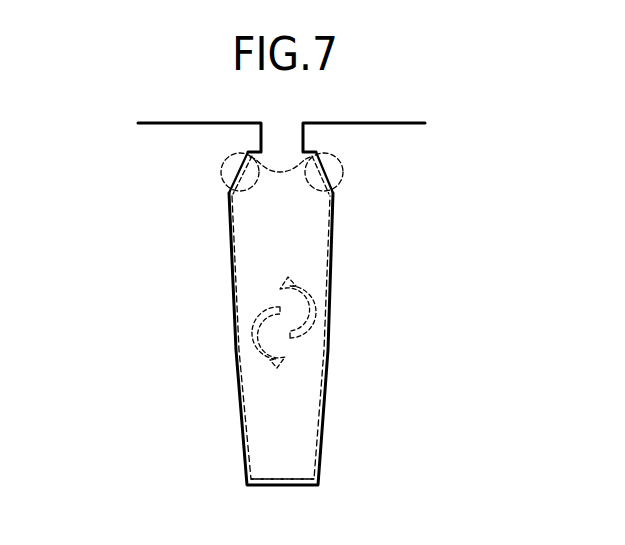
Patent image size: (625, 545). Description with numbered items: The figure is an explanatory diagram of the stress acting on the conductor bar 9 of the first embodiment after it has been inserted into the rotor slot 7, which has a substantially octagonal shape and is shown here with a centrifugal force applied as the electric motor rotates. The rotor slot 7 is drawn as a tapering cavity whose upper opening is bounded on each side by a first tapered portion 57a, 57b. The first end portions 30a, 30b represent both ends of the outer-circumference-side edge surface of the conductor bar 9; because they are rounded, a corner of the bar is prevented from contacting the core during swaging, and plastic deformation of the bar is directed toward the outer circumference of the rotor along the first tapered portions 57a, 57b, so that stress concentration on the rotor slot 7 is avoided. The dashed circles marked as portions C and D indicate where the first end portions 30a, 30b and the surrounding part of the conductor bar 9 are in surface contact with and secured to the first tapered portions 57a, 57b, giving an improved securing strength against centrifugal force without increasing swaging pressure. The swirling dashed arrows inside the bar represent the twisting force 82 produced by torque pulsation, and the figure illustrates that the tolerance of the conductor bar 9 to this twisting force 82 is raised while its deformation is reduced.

The rotor slot 7 is at (188, 308).
The conductor bar 9 is at (272, 432).
The first end portion 30a is at (248, 153).
The first end portion 30b is at (316, 153).
The first tapered portion 57a is at (229, 193).
The first tapered portion 57b is at (333, 193).
The twisting force 82 is at (309, 353).
The portion C is at (220, 174).
The portion D is at (345, 173).